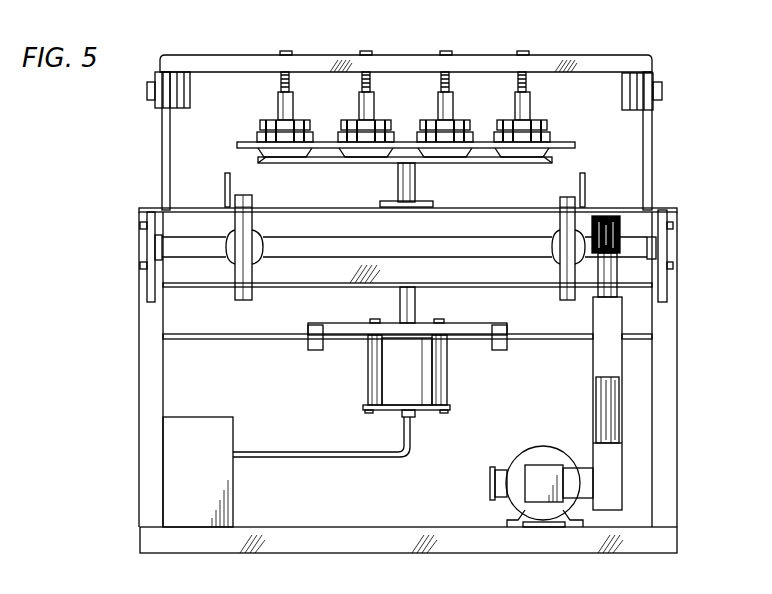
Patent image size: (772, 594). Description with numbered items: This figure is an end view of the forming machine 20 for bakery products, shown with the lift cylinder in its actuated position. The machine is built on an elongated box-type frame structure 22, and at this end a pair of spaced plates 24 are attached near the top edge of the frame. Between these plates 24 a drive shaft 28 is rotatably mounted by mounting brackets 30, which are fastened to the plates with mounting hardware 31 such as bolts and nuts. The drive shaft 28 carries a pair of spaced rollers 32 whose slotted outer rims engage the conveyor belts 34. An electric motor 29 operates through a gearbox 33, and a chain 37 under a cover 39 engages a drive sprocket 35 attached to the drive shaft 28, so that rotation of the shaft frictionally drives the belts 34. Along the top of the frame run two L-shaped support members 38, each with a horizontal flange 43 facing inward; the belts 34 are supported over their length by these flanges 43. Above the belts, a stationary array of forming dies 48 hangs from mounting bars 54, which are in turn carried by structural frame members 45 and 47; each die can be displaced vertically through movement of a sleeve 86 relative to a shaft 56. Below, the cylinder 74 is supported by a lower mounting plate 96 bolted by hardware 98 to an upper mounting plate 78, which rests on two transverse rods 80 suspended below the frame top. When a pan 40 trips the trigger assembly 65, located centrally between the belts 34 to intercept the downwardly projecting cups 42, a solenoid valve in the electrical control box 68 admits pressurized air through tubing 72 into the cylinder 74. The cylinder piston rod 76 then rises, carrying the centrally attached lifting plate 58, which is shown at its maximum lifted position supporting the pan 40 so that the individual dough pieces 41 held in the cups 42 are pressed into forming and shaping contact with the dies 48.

The forming machine 20 is at (668, 208).
The frame structure 22 is at (148, 418).
The plates 24 is at (148, 252).
The drive shaft 28 is at (415, 243).
The electric motor 29 is at (520, 457).
The mounting brackets 30 is at (162, 223).
The mounting hardware 31 is at (139, 275).
The rollers 32 is at (255, 272).
The gearbox 33 is at (540, 468).
The conveyor belts 34 is at (242, 300).
The drive sprocket 35 is at (613, 240).
The chain 37 is at (596, 393).
The support members 38 is at (225, 185).
The cover 39 is at (603, 362).
The pan 40 is at (570, 142).
The dough pieces 41 is at (293, 145).
The cups 42 is at (363, 163).
The flange 43 is at (252, 206).
The structural frame member 45 is at (158, 102).
The structural frame member 47 is at (171, 148).
The forming dies 48 is at (272, 120).
The mounting bars 54 is at (255, 65).
The shaft 56 is at (290, 82).
The lifting plate 58 is at (472, 163).
The trigger assembly 65 is at (425, 198).
The electrical control box 68 is at (235, 493).
The tubing 72 is at (281, 452).
The cylinder 74 is at (430, 388).
The cylinder piston rod 76 is at (415, 302).
The upper mounting plate 78 is at (328, 323).
The transverse rods 80 is at (265, 339).
The sleeve 86 is at (295, 100).
The lower mounting plate 96 is at (428, 410).
The bolts and hardware 98 is at (368, 372).